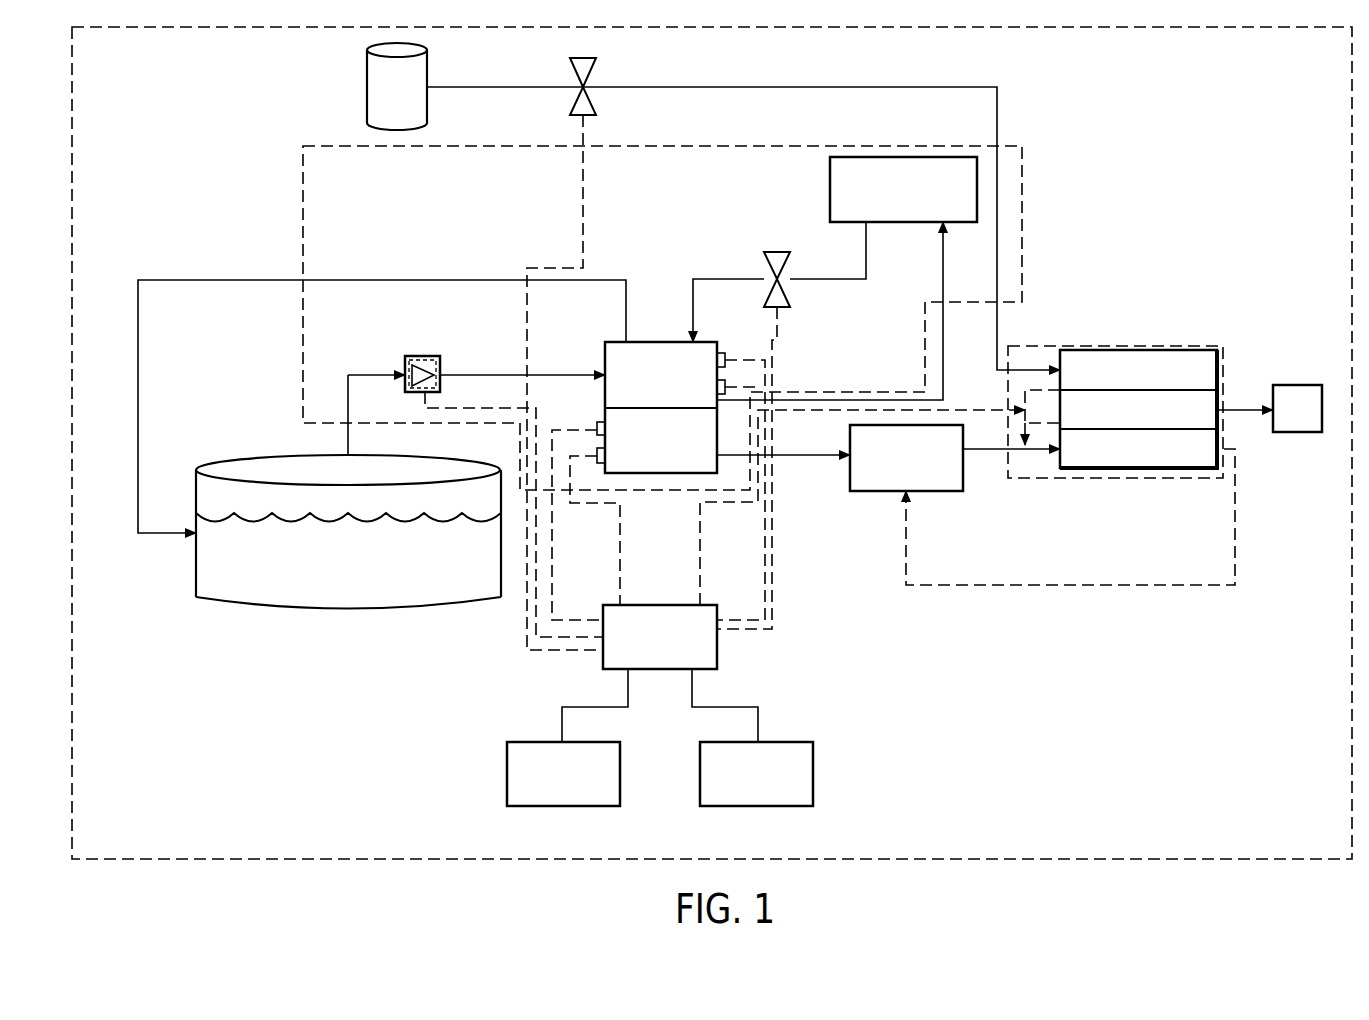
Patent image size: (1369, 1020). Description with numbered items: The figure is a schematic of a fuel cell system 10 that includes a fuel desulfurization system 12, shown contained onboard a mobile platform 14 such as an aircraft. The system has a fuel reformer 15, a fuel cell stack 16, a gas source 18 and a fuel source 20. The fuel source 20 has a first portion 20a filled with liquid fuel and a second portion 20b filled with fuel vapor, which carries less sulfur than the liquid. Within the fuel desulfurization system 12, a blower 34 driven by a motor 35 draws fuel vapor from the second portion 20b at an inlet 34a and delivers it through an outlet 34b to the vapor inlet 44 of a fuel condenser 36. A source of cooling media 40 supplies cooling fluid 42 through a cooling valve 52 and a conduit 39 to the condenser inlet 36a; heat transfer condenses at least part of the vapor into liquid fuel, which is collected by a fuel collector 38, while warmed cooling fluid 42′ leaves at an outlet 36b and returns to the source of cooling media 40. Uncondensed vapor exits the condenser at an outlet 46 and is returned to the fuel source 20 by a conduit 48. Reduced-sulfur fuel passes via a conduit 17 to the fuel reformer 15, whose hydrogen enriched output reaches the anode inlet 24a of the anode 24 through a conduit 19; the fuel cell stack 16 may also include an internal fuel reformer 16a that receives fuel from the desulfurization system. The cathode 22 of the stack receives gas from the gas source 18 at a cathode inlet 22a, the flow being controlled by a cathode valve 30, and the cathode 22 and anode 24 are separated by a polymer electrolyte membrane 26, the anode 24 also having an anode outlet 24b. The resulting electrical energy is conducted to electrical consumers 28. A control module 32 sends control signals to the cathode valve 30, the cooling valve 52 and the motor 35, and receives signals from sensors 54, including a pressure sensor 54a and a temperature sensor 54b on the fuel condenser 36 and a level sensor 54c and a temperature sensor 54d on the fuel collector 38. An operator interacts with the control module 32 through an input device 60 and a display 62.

The fuel cell system 10 is at (1278, 110).
The fuel desulfurization system 12 is at (1022, 170).
The mobile platform 14 is at (72, 432).
The fuel reformer 15 is at (925, 491).
The fuel cell stack 16 is at (1103, 345).
The internal fuel reformer 16a is at (1008, 395).
The conduit 17 is at (810, 455).
The gas source 18 is at (427, 80).
The conduit 19 is at (1000, 449).
The fuel source 20 is at (278, 660).
The first portion 20a is at (225, 600).
The second portion 20b is at (205, 490).
The cathode 22 is at (1190, 352).
The cathode inlet 22a is at (1060, 368).
The anode 24 is at (1140, 470).
The anode inlet 24a is at (1060, 460).
The anode outlet 24b is at (1217, 455).
The polymer electrolyte membrane 26 is at (1200, 405).
The electrical consumers 28 is at (1297, 408).
The cathode valve 30 is at (596, 70).
The control module 32 is at (717, 655).
The blower 34 is at (415, 330).
The inlet 34a is at (395, 372).
The outlet 34b is at (445, 370).
The motor 35 is at (432, 356).
The fuel condenser 36 is at (668, 285).
The inlet 36a is at (690, 338).
The outlet 36b is at (722, 403).
The fuel collector 38 is at (665, 473).
The conduit 39 is at (348, 438).
The source of cooling media 40 is at (903, 157).
The cooling fluid 42 is at (866, 265).
The warmed cooling fluid 42′ is at (943, 285).
The vapor inlet 44 is at (600, 370).
The outlet 46 is at (622, 342).
The conduit 48 is at (462, 280).
The cooling valve 52 is at (777, 252).
The sensors 54 is at (822, 358).
The pressure sensor 54a is at (730, 350).
The temperature sensor 54b is at (725, 382).
The level sensor 54c is at (597, 420).
The temperature sensor 54d is at (600, 463).
The input device 60 is at (620, 775).
The display 62 is at (813, 775).